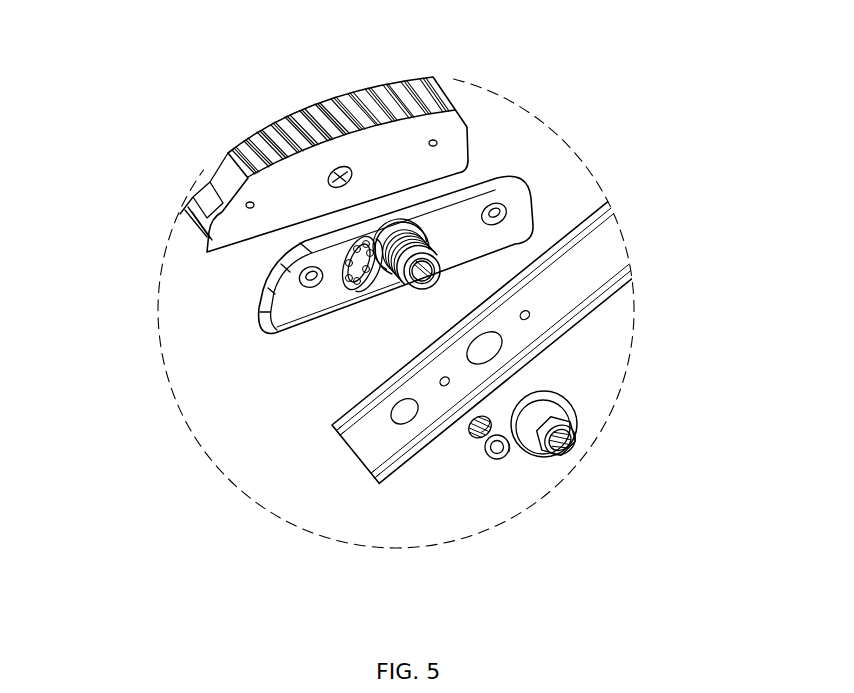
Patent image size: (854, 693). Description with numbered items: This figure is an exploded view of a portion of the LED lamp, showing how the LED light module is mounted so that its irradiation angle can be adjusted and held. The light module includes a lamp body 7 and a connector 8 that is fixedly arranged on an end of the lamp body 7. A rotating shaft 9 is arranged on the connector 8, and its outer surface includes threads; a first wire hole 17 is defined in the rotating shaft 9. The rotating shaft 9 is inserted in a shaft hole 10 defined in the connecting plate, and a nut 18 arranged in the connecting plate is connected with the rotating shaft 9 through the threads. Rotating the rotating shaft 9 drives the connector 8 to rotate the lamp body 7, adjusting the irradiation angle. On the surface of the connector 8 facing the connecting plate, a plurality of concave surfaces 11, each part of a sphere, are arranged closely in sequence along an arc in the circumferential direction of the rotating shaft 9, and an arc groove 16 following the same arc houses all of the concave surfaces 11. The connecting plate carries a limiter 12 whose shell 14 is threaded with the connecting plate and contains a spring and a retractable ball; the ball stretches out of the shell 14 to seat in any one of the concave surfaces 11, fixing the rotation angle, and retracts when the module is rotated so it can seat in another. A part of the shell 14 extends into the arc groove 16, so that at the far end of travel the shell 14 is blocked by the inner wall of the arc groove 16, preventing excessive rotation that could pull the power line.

The lamp body 7 is at (420, 80).
The connector 8 is at (463, 215).
The rotating shaft 9 is at (432, 247).
The shaft hole 10 is at (487, 347).
The concave surfaces 11 is at (350, 300).
The limiter 12 is at (477, 438).
The shell 14 is at (500, 457).
The arc groove 16 is at (357, 292).
The first wire hole 17 is at (426, 270).
The nut 18 is at (578, 427).